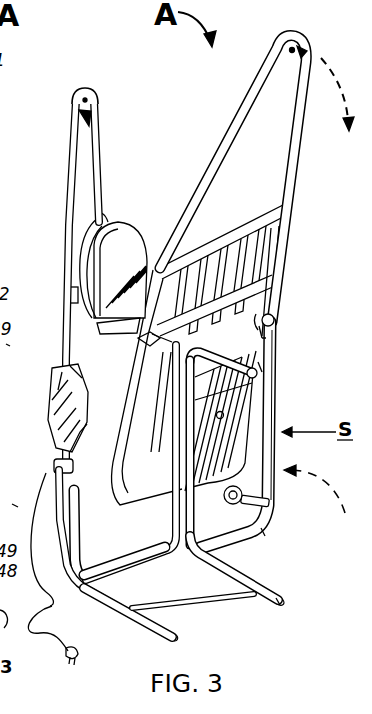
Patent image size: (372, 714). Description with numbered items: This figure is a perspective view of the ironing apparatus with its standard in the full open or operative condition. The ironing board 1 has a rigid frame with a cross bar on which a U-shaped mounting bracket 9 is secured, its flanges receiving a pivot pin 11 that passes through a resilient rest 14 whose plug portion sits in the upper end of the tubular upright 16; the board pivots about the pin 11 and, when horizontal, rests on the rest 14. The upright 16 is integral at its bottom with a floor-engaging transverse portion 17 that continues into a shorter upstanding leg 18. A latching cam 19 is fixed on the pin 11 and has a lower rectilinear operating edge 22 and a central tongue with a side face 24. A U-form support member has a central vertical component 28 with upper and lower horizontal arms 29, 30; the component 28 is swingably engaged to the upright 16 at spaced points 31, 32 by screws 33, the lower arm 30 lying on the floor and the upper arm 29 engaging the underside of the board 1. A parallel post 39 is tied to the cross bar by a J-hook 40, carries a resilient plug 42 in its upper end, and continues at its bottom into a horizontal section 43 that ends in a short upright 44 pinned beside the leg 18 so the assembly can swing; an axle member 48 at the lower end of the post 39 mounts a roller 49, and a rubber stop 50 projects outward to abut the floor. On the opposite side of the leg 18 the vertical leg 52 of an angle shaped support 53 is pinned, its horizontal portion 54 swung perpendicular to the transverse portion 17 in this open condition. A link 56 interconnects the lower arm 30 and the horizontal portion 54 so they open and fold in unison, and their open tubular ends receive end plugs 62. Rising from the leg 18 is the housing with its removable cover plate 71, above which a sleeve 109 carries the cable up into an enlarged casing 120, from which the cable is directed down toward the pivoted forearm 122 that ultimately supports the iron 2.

The ironing board 1 is at (303, 42).
The iron 2 is at (133, 228).
The U-shaped mounting bracket 9 is at (134, 360).
The pivot pin 11 is at (24, 337).
The resilient rest 14 is at (35, 232).
The upright 16 is at (170, 510).
The transverse portion 17 is at (147, 562).
The upstanding leg 18 is at (58, 468).
The latching cam 19 is at (134, 339).
The lower rectilinear operating edge 22 is at (11, 629).
The side face 24 is at (276, 626).
The central vertical component 28 is at (243, 407).
The upper horizontal arm 29 is at (263, 388).
The lower horizontal arm 30 is at (226, 563).
The engagement point 31 is at (6, 344).
The engagement point 32 is at (9, 496).
The screws 33 is at (284, 318).
The post 39 is at (277, 367).
The J-hook 40 is at (276, 347).
The resilient plug 42 is at (276, 324).
The horizontal section 43 is at (262, 532).
The short upright 44 is at (52, 522).
The axle member 48 is at (244, 497).
The roller 49 is at (248, 478).
The stop 50 is at (274, 506).
The vertical leg 52 is at (82, 521).
The angle shaped support 53 is at (74, 597).
The horizontal portion 54 is at (157, 636).
The link 56 is at (195, 607).
The end plugs 62 is at (56, 484).
The cover plate 71 is at (50, 380).
The sleeve 109 is at (96, 117).
The enlarged casing 120 is at (97, 92).
The forearm 122 is at (97, 137).